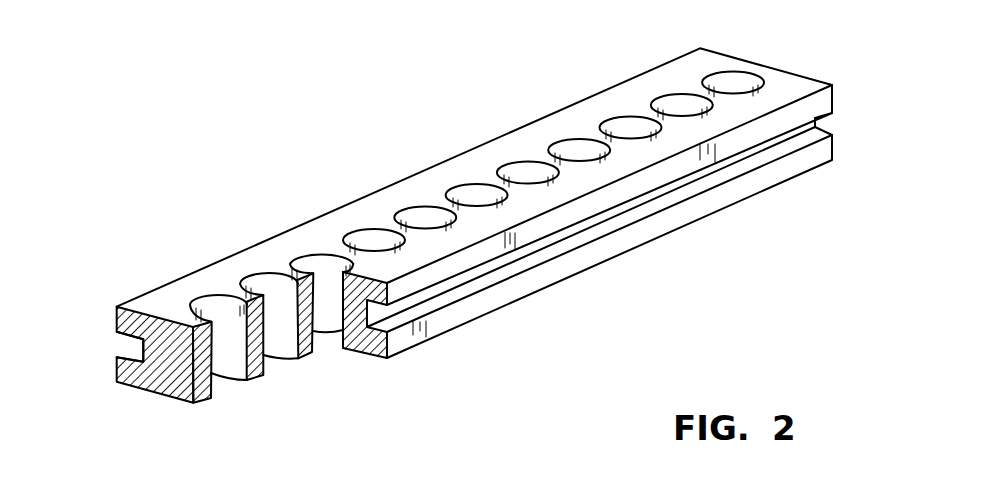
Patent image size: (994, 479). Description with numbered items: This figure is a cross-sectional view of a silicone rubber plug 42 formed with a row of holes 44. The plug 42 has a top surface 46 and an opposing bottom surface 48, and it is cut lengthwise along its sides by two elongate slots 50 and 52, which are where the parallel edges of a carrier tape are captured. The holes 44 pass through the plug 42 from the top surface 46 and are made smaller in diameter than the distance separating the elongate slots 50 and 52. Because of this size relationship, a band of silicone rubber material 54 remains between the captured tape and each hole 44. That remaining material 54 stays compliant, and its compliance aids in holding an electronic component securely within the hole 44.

The silicone rubber plug 42 is at (233, 268).
The holes 44 is at (423, 213).
The top surface 46 is at (613, 102).
The bottom surface 48 is at (180, 403).
The elongate slot 50 is at (113, 343).
The elongate slot 52 is at (377, 320).
The silicone rubber material 54 is at (343, 307).